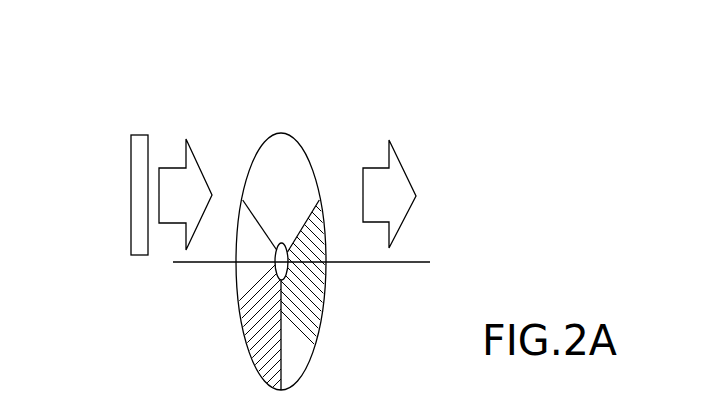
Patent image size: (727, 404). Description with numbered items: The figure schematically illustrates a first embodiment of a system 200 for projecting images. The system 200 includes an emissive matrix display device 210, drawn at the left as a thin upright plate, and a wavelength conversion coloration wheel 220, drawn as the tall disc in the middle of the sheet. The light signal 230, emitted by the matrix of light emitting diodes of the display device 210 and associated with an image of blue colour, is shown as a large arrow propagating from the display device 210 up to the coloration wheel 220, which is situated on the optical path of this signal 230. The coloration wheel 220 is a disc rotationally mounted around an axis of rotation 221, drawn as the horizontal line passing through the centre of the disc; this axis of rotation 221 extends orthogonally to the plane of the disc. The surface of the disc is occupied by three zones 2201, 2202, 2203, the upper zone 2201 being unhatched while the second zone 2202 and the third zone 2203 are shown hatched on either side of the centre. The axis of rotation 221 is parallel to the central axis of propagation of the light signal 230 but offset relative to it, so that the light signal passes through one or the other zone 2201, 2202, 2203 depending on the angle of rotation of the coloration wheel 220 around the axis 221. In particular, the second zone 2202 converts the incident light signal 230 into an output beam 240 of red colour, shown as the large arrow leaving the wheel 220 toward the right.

The system for projecting images 200 is at (352, 76).
The emissive matrix display device 210 is at (137, 232).
The wavelength conversion coloration wheel 220 is at (262, 129).
The axis of rotation 221 is at (362, 263).
The light signal 230 is at (177, 177).
The output beam 240 is at (374, 176).
The first zone 2201 is at (292, 145).
The second zone 2202 is at (311, 357).
The third zone 2203 is at (253, 356).